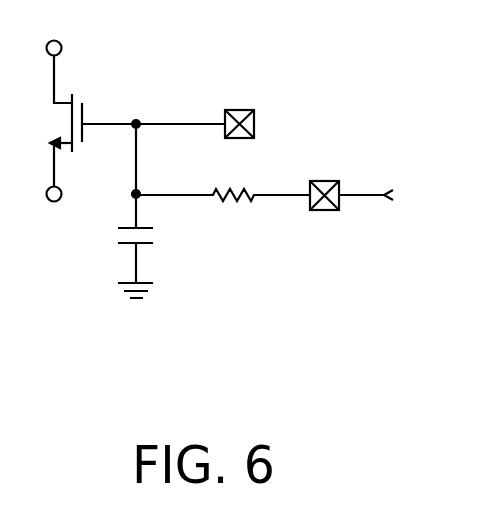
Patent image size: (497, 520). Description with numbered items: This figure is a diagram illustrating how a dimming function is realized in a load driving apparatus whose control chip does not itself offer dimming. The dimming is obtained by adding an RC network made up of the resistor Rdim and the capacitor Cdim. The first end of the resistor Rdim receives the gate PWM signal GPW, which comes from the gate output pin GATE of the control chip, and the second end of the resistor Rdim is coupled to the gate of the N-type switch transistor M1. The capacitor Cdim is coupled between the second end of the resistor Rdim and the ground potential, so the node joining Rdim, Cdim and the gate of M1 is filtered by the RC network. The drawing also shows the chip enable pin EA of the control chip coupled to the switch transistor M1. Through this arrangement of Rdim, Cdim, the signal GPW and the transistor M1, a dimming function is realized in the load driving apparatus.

The switch transistor M1 is at (50, 121).
The chip enable pin EA is at (168, 105).
The resistor Rdim is at (223, 175).
The gate output pin GATE is at (325, 177).
The gate PWM signal GPW is at (396, 194).
The capacitor Cdim is at (168, 258).